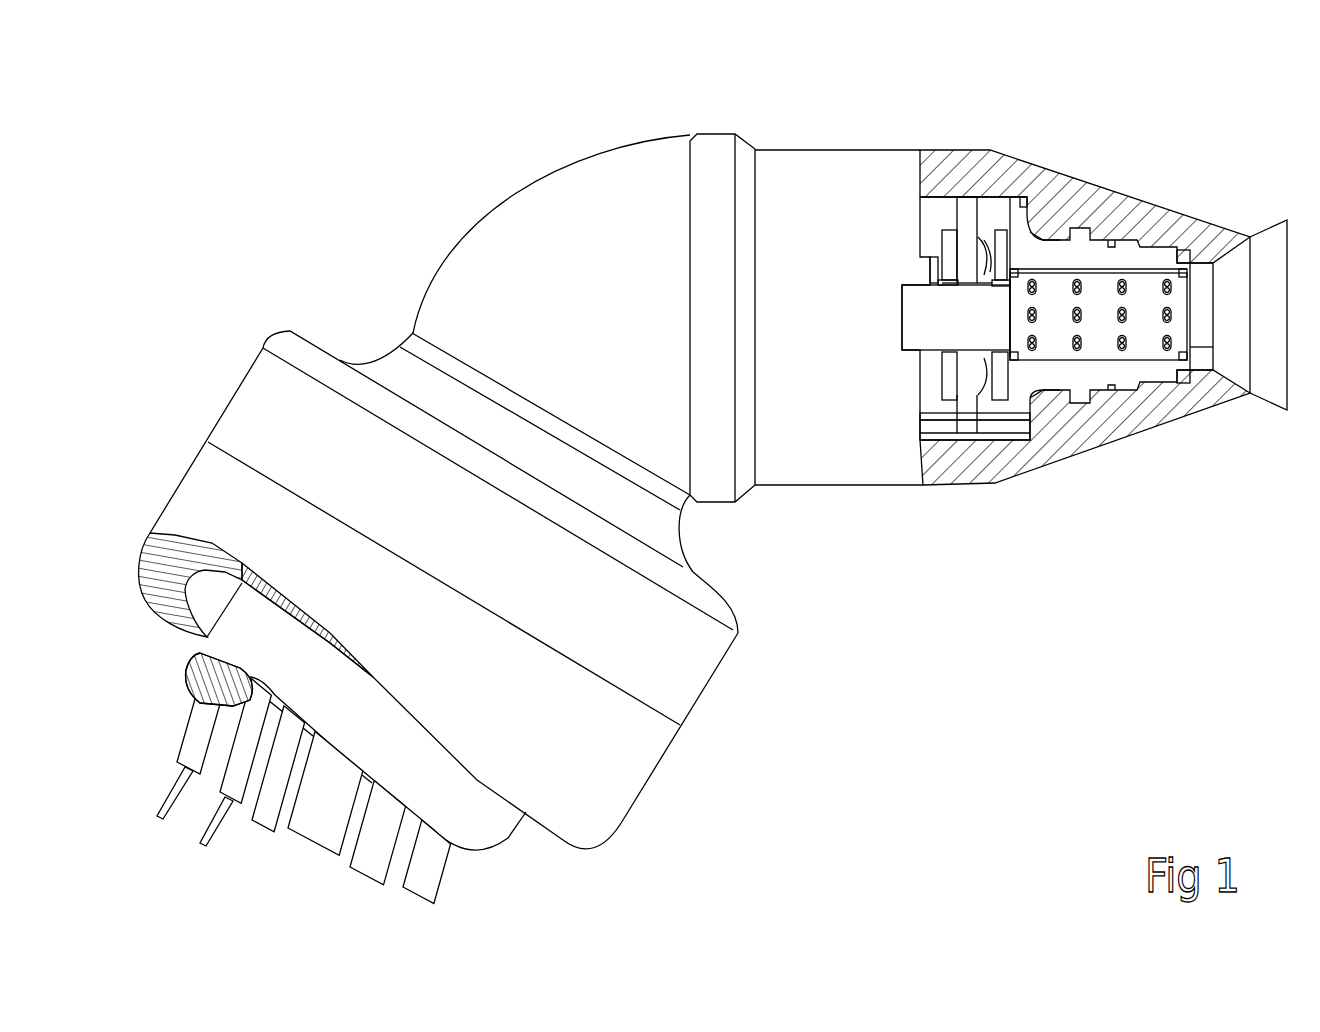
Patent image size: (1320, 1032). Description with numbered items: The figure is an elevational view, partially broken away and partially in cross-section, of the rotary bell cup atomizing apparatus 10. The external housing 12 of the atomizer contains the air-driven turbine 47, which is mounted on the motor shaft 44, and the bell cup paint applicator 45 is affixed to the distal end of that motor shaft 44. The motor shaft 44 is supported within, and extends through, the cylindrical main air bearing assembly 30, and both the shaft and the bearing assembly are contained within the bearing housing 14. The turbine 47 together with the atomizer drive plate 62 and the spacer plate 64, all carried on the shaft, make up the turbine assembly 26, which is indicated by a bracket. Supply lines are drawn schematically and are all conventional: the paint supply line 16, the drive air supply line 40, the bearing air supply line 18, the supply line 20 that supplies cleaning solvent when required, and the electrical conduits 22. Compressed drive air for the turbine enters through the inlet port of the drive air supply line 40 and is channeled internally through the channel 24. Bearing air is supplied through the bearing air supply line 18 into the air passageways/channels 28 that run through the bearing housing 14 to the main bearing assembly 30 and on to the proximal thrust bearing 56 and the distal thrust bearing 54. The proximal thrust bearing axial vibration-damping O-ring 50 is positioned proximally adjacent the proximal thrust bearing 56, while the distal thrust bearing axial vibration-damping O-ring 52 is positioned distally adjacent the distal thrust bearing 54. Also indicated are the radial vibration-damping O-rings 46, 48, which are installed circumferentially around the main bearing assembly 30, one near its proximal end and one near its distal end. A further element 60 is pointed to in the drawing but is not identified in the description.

The rotary bell cup atomizing apparatus 10 is at (488, 190).
The external housing 12 is at (782, 165).
The bearing housing 14 is at (1130, 253).
The paint supply line 16 is at (317, 830).
The bearing air supply line 18 is at (372, 867).
The supply line 20 is at (423, 889).
The electrical conduits 22 is at (242, 775).
The channel 24 is at (985, 187).
The turbine assembly 26 is at (997, 92).
The air passageways/channels 28 is at (1040, 365).
The cylindrical main air bearing assembly 30 is at (1139, 345).
The drive air supply line 40 is at (270, 812).
The motor shaft 44 is at (933, 225).
The bell cup paint applicator 45 is at (1258, 277).
The radial vibration-damping O-ring 46 is at (1185, 262).
The air-driven turbine 47 is at (982, 213).
The radial vibration-damping O-ring 48 is at (1052, 238).
The proximal thrust bearing axial vibration-damping O-ring 50 is at (950, 255).
The distal thrust bearing axial vibration-damping O-ring 52 is at (1024, 200).
The distal thrust bearing 54 is at (1060, 205).
The proximal thrust bearing 56 is at (936, 265).
The ring 60 is at (978, 246).
The atomizer drive plate 62 is at (960, 213).
The spacer plate 64 is at (999, 230).